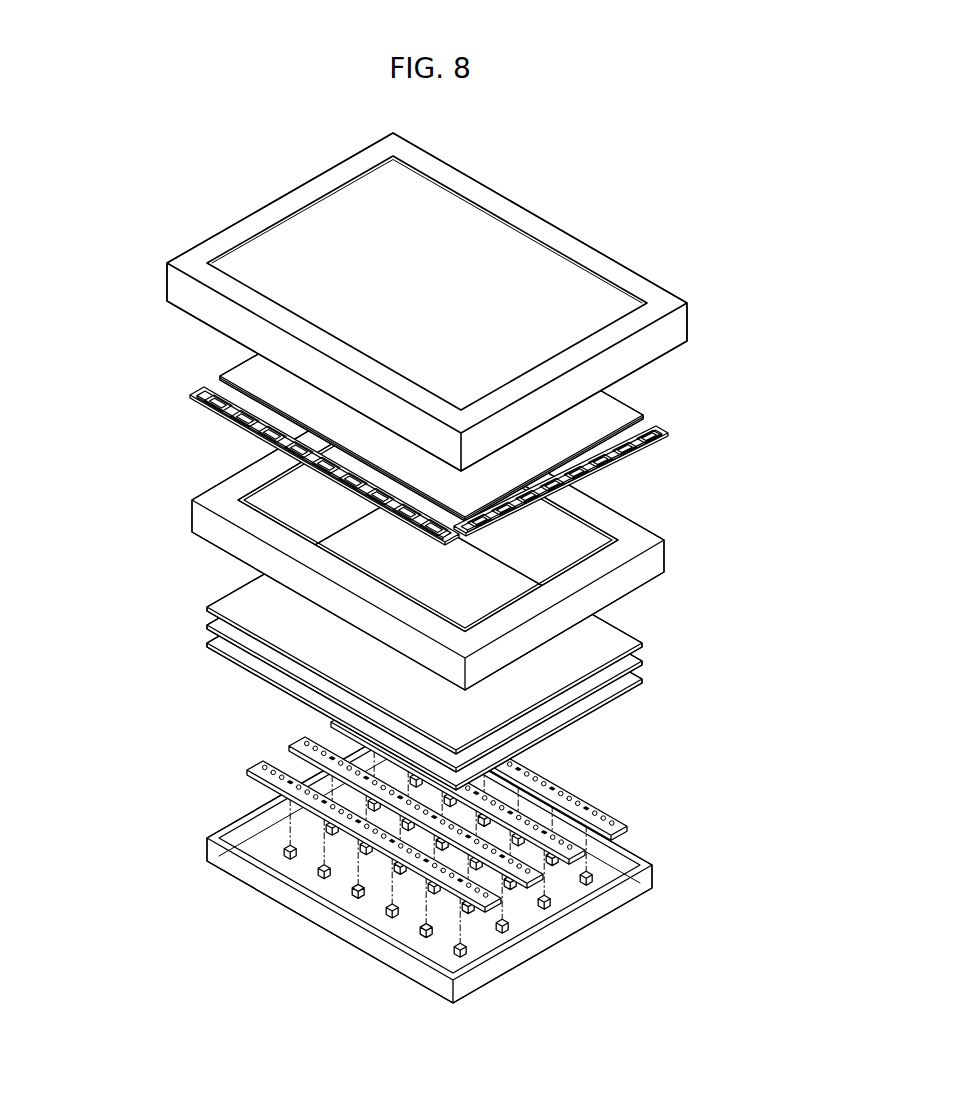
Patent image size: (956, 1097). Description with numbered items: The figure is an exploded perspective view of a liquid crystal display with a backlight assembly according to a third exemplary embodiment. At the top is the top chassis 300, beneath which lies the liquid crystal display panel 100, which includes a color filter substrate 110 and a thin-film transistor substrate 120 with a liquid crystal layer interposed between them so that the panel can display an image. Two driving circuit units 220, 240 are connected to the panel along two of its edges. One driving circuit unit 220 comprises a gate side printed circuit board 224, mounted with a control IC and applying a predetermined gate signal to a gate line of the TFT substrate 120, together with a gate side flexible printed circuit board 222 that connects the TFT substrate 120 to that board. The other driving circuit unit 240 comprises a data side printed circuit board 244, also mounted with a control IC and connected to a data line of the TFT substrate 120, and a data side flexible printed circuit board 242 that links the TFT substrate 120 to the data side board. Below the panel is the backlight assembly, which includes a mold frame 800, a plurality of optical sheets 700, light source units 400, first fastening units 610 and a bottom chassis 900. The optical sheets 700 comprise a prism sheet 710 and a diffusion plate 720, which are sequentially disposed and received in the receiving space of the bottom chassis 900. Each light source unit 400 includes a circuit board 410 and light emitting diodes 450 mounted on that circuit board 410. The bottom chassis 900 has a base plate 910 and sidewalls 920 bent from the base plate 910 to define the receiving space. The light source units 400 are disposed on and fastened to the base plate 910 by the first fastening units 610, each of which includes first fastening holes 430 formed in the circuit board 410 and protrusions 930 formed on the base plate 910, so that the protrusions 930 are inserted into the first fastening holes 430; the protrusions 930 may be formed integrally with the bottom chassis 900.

The top chassis 300 is at (688, 297).
The liquid crystal display panel 100 is at (508, 397).
The color filter substrate 110 is at (625, 410).
The thin-film transistor substrate 120 is at (652, 418).
The driving circuit unit 220 is at (625, 477).
The gate side flexible printed circuit board 222 is at (656, 428).
The gate side printed circuit board 224 is at (667, 434).
The driving circuit unit 240 is at (249, 455).
The data side flexible printed circuit board 242 is at (210, 380).
The data side printed circuit board 244 is at (205, 397).
The mold frame 800 is at (660, 552).
The optical sheets 700 is at (420, 645).
The prism sheet 710 is at (207, 626).
The diffusion plate 720 is at (207, 644).
The light source unit 400 is at (372, 800).
The circuit board 410 is at (255, 768).
The first fastening hole 430 is at (288, 784).
The light emitting diode 450 is at (232, 772).
The bottom chassis 900 is at (660, 881).
The base plate 910 is at (300, 874).
The sidewall 920 is at (335, 922).
The protrusion 930 is at (420, 932).
The first fastening unit 610 is at (620, 1008).